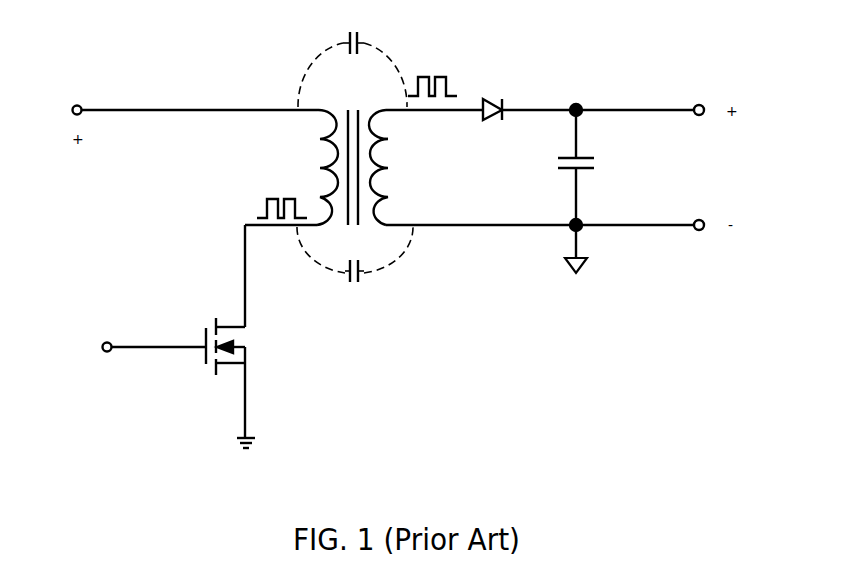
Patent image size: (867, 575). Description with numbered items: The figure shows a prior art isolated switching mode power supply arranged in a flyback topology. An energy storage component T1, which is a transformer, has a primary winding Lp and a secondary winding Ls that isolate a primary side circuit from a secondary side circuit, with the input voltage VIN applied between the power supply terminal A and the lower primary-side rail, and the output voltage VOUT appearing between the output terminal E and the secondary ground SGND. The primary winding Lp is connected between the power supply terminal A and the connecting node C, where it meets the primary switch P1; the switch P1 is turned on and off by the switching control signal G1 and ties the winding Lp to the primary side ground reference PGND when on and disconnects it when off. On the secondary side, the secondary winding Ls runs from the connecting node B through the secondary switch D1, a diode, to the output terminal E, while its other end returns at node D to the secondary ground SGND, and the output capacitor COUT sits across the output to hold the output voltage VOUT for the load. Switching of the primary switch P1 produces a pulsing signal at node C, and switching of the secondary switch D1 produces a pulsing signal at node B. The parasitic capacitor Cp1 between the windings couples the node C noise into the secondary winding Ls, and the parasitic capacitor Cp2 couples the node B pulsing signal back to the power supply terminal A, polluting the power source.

The power supply terminal A is at (91, 100).
The connecting node B is at (417, 121).
The connecting node C is at (284, 244).
The secondary winding node D is at (422, 244).
The output terminal E is at (688, 99).
The energy storage component T1 is at (352, 155).
The primary winding Lp is at (312, 167).
The secondary winding Ls is at (392, 167).
The parasitic capacitor Cp1 is at (355, 266).
The parasitic capacitor Cp2 is at (352, 56).
The secondary switch D1 is at (492, 97).
The output capacitor COUT is at (606, 166).
The primary switch P1 is at (244, 378).
The switching control signal G1 is at (139, 347).
The input voltage VIN is at (75, 257).
The output voltage VOUT is at (724, 178).
The secondary ground SGND is at (578, 283).
The primary side ground reference PGND is at (279, 445).